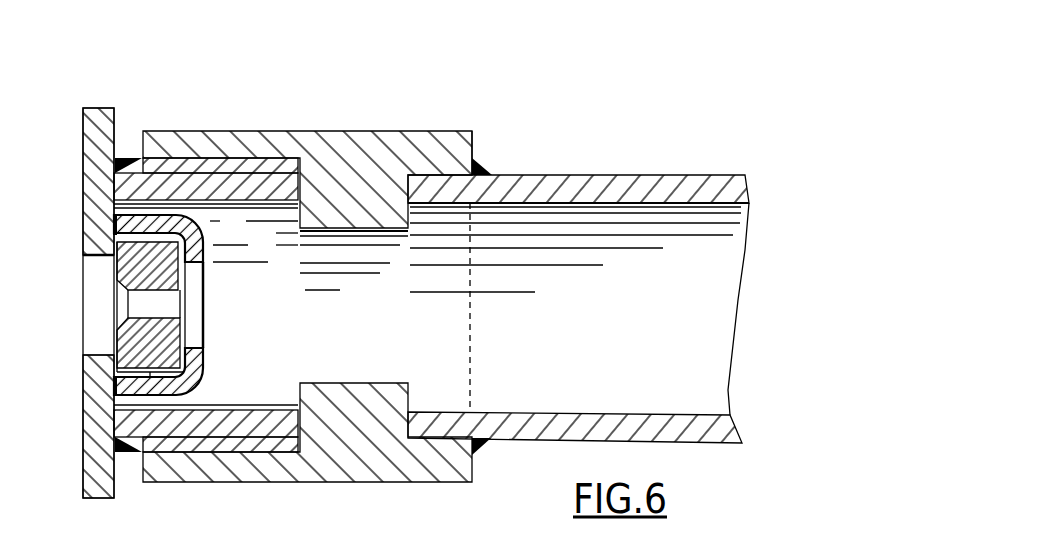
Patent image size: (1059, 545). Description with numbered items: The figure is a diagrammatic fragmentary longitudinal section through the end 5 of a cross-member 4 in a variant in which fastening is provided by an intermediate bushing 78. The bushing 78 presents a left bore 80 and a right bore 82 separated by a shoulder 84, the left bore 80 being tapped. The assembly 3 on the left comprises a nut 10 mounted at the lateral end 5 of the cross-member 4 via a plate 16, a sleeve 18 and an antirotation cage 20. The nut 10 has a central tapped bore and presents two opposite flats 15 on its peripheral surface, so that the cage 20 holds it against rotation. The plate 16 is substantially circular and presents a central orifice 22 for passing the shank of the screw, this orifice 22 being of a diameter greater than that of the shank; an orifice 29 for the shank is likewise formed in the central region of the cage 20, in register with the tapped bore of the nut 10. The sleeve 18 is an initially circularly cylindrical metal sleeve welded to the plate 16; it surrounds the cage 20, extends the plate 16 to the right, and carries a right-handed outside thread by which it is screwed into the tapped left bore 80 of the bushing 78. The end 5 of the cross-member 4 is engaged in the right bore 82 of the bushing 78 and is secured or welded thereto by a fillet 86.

The coupling 3 is at (355, 253).
The cross-member 4 is at (578, 257).
The end of the cross-member 5 is at (602, 175).
The nut 10 is at (192, 278).
The flats 15 is at (152, 243).
The plate 16 is at (93, 418).
The sleeve 18 is at (248, 192).
The antirotation cage 20 is at (212, 301).
The central orifice 22 is at (98, 258).
The orifice 29 is at (200, 322).
The intermediate bushing 78 is at (352, 131).
The left bore 80 is at (223, 158).
The right bore 82 is at (433, 170).
The shoulder 84 is at (355, 228).
The fillet 86 is at (485, 165).